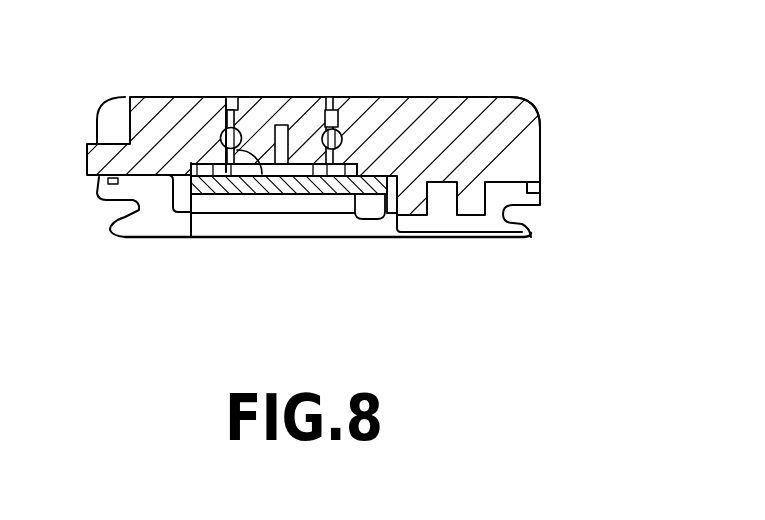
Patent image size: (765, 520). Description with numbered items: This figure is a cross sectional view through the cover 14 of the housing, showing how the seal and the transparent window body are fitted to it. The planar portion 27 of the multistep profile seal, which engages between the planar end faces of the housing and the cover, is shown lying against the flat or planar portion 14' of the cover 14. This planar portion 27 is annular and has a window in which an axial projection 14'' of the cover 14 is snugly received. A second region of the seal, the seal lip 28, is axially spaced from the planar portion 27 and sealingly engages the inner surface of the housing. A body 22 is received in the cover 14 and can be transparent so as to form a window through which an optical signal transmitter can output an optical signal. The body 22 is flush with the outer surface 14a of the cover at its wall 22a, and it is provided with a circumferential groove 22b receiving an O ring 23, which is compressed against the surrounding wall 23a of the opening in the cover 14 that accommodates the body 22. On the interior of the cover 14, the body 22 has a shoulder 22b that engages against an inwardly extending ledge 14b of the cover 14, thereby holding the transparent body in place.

The cover 14 is at (283, 126).
The outer surface of the cover 14a is at (508, 98).
The inwardly extending ledge of the cover 14b is at (227, 100).
The planar portion of the cover 14' is at (86, 240).
The axial projection of the cover 14'' is at (154, 244).
The body 22 is at (313, 98).
The wall of the body 22a is at (276, 98).
The circumferential groove / shoulder of the body 22b is at (350, 98).
The O ring 23 is at (224, 133).
The surrounding wall of the opening 23a is at (226, 172).
The planar portion of the seal 27 is at (540, 199).
The seal lip 28 is at (530, 232).